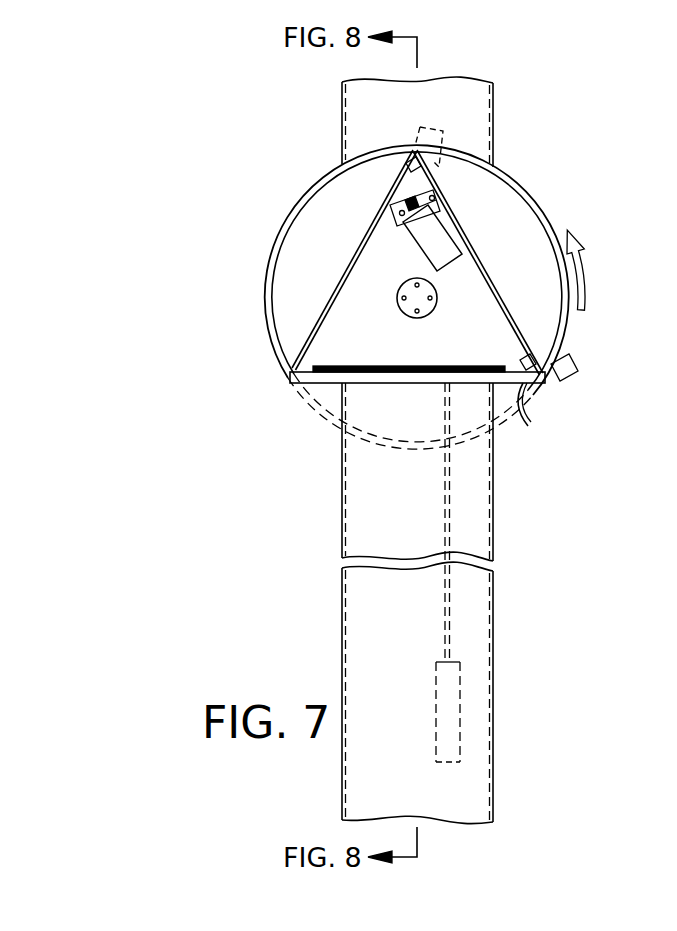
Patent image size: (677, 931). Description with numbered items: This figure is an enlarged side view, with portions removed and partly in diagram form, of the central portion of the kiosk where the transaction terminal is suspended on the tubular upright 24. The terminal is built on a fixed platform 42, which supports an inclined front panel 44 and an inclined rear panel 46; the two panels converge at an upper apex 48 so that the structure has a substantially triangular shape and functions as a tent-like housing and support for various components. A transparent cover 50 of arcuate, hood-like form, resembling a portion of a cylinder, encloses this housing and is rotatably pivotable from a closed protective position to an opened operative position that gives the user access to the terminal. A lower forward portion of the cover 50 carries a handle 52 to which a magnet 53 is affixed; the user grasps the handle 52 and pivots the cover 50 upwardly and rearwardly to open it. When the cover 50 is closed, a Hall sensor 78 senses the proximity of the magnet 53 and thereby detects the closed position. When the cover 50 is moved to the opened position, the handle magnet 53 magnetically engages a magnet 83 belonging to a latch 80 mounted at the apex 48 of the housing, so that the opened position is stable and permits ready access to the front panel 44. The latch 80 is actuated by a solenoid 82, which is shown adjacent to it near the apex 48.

The tubular upright 24 is at (495, 477).
The fixed platform 42 is at (397, 372).
The inclined front panel 44 is at (485, 264).
The inclined rear panel 46 is at (313, 323).
The upper apex 48 is at (400, 153).
The transparent cover 50 is at (318, 185).
The handle 52 is at (567, 373).
The magnet 53 is at (542, 352).
The Hall sensor 78 is at (536, 418).
The latch 80 is at (433, 199).
The solenoid 82 is at (425, 243).
The magnet 83 is at (414, 151).